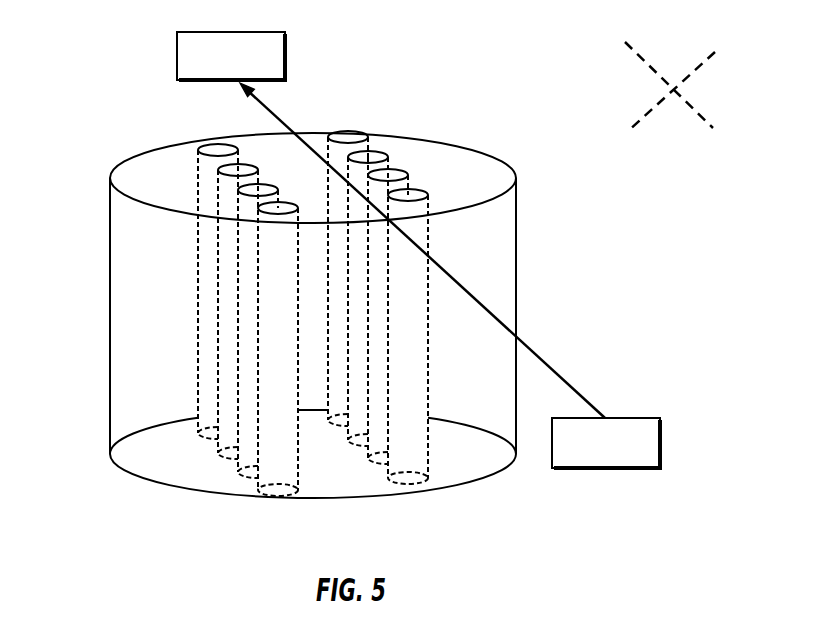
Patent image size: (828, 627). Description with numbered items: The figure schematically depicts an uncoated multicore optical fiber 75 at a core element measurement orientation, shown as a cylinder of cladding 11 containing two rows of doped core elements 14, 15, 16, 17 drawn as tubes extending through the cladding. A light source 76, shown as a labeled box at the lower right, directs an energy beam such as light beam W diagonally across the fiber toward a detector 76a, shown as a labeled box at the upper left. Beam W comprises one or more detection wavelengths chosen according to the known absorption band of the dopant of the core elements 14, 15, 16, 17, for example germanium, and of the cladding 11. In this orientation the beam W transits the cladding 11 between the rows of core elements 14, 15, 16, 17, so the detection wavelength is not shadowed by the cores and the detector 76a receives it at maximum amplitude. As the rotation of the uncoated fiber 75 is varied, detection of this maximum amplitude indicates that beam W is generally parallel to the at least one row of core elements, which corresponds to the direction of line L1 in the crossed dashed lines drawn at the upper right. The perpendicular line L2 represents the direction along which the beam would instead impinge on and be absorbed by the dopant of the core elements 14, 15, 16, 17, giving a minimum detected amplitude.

The uncoated fiber 75 is at (164, 110).
The cladding 11 is at (160, 173).
The core element 14 is at (368, 136).
The core element 15 is at (388, 157).
The core element 16 is at (408, 175).
The core element 17 is at (428, 195).
The detector 76a is at (285, 47).
The light source 76 is at (660, 427).
The light beam W is at (575, 376).
The line L1 is at (652, 68).
The line L2 is at (645, 117).